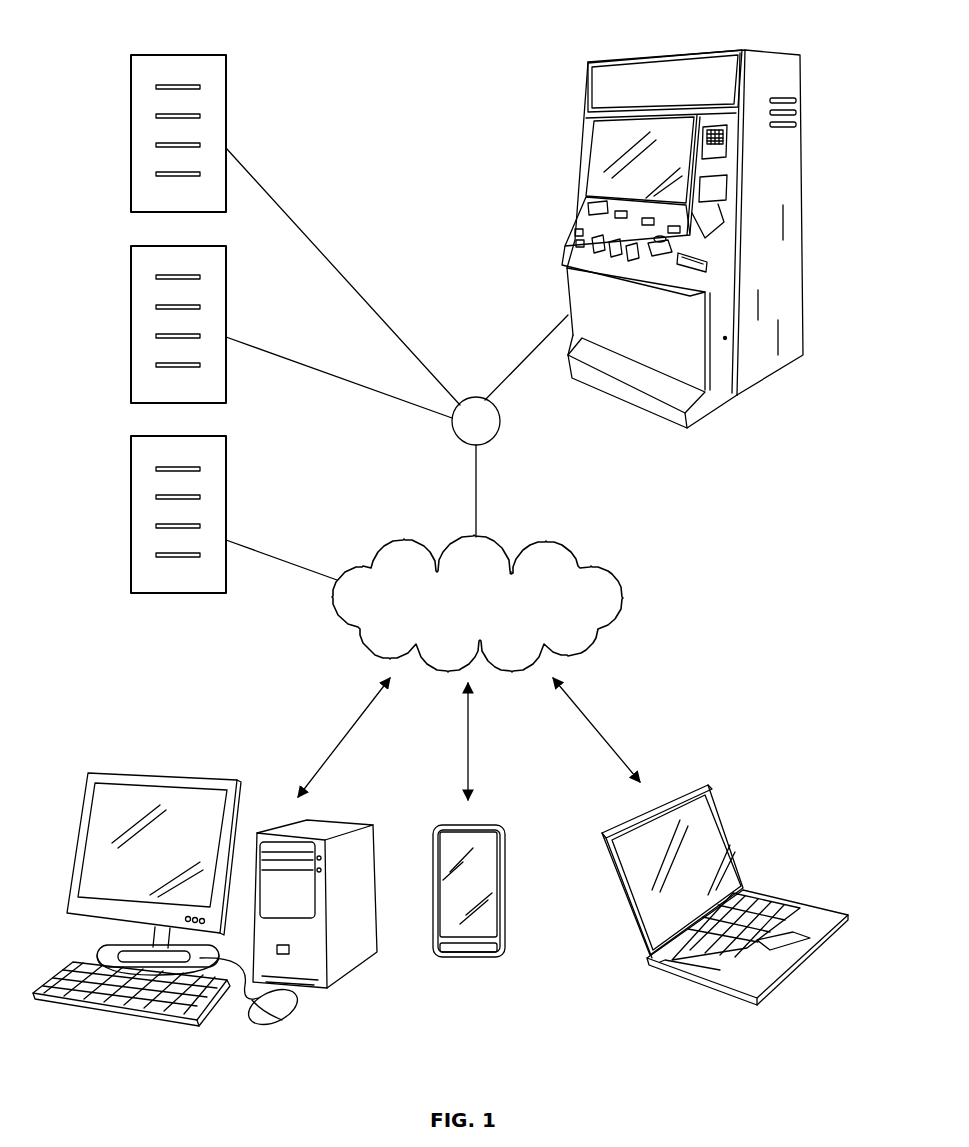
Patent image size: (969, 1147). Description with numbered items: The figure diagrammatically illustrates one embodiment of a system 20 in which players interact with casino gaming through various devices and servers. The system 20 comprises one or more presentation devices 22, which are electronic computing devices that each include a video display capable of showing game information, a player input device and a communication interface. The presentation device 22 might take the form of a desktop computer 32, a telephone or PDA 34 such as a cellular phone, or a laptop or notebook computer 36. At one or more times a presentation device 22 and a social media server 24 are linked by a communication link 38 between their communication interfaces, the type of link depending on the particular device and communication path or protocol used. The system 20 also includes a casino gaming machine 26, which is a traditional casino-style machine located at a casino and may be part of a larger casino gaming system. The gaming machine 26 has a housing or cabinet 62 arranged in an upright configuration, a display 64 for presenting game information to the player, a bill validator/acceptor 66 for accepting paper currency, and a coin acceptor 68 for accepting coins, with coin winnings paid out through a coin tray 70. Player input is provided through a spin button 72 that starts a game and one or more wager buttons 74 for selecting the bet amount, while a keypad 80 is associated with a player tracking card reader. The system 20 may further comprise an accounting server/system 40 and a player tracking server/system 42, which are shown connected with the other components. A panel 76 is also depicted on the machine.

The system 20 is at (390, 58).
The presentation device 22 is at (392, 1018).
The social media server 24 is at (243, 485).
The casino gaming machine 26 is at (673, 248).
The desktop computer 32 is at (212, 917).
The telephone or PDA 34 is at (499, 913).
The laptop or notebook computer 36 is at (726, 907).
The communication link 38 is at (558, 547).
The accounting server/system 40 is at (243, 306).
The player tracking server/system 42 is at (243, 117).
The housing or cabinet 62 is at (707, 252).
The display 64 is at (600, 141).
The bill validator/acceptor 66 is at (688, 272).
The coin acceptor 68 is at (655, 250).
The coin tray 70 is at (672, 393).
The spin button 72 is at (596, 252).
The wager button 74 is at (576, 242).
The panel 76 is at (720, 187).
The keypad 80 is at (724, 143).